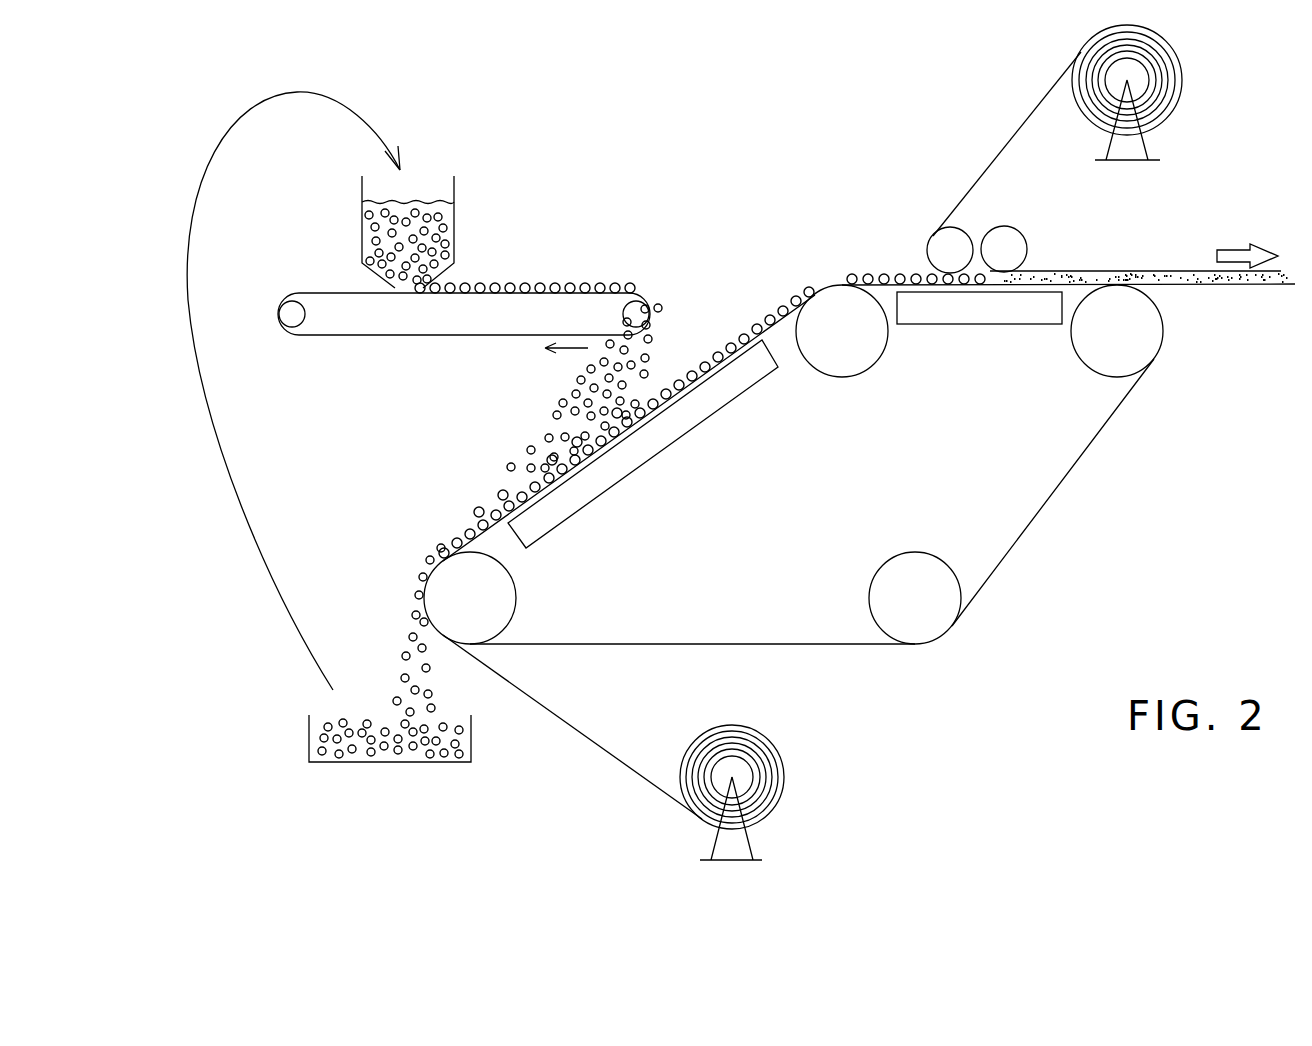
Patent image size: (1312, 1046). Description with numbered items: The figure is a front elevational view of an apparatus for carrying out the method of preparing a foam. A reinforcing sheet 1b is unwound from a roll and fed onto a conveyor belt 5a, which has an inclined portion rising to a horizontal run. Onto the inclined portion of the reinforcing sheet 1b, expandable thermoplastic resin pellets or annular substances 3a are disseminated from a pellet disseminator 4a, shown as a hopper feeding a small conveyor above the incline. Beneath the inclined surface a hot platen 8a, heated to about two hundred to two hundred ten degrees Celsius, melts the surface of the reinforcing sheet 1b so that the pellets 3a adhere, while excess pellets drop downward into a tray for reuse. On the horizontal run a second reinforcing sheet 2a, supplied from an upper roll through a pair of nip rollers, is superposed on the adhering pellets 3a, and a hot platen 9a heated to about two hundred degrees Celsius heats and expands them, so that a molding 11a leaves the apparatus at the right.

The reinforcing sheet 1b is at (575, 732).
The second reinforcing sheet 2a is at (1016, 98).
The expandable thermoplastic resin pellets 3a is at (807, 280).
The pellet disseminator 4a is at (385, 338).
The conveyor belt 5a is at (1108, 471).
The hot platen 8a is at (683, 425).
The hot platen 9a is at (997, 310).
The molding 11a is at (1192, 270).